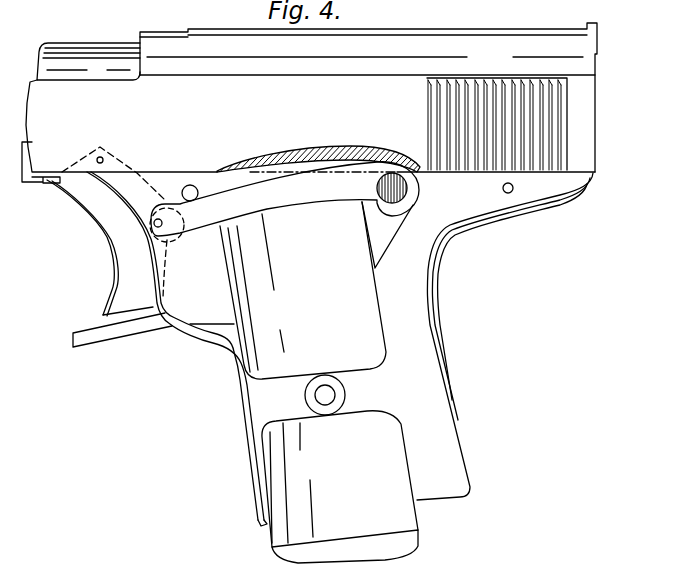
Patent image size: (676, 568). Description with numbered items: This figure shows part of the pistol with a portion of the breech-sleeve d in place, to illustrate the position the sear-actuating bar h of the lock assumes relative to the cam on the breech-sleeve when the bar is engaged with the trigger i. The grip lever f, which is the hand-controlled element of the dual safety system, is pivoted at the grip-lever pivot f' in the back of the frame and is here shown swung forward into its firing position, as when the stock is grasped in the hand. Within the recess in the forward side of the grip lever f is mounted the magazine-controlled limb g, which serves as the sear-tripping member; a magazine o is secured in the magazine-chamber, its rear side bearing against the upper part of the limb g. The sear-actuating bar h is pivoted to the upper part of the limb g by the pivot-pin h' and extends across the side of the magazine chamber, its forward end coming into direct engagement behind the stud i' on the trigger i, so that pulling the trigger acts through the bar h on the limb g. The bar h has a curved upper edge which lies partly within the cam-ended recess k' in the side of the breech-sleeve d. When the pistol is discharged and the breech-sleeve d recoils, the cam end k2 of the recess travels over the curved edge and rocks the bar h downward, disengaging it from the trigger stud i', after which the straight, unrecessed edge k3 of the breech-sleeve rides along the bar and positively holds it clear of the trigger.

The breech-sleeve d is at (317, 97).
The grip lever f is at (308, 303).
The grip-lever pivot f' is at (521, 212).
The trigger i is at (106, 231).
The trigger stud i' is at (177, 253).
The sear-actuating bar h is at (285, 199).
The pivot-pin of the sear-actuating bar h' is at (370, 200).
The magazine-controlled limb g is at (387, 235).
The cam end of the recess k2 is at (297, 158).
The cam-ended recess k' is at (327, 135).
The straight edge of the breech sleeve k3 is at (190, 171).
The magazine o is at (303, 290).